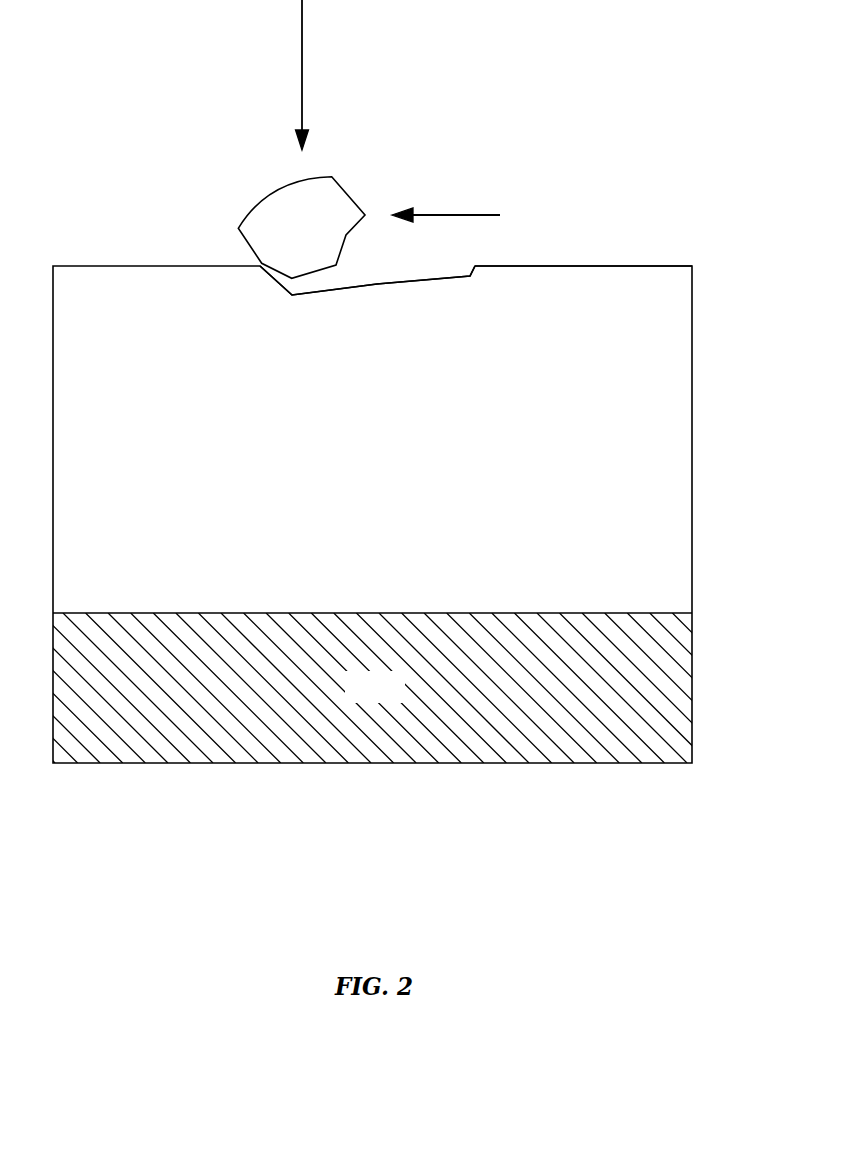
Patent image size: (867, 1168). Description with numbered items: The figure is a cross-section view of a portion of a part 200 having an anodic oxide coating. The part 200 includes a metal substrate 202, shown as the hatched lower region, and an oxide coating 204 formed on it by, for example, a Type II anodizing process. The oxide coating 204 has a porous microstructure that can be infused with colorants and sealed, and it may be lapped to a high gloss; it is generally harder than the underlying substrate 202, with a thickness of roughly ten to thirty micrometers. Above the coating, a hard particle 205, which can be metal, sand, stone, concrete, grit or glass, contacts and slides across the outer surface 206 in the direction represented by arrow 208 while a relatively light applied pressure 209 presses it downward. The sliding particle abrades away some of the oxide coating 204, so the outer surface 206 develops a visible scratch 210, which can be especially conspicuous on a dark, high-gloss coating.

The part 200 is at (102, 204).
The metal substrate 202 is at (388, 698).
The oxide coating 204 is at (388, 483).
The hard particle 205 is at (317, 239).
The outer surface 206 is at (583, 266).
The arrow 208 is at (446, 205).
The applied pressure 209 is at (317, 75).
The scratch 210 is at (373, 283).